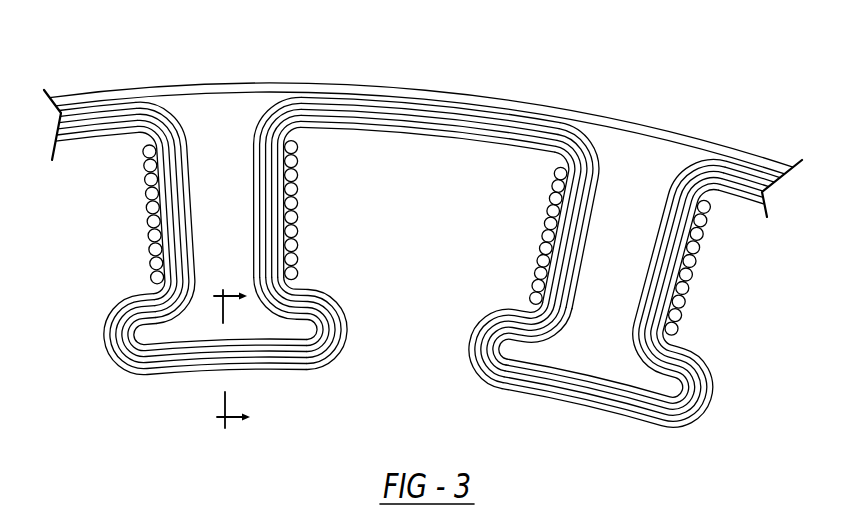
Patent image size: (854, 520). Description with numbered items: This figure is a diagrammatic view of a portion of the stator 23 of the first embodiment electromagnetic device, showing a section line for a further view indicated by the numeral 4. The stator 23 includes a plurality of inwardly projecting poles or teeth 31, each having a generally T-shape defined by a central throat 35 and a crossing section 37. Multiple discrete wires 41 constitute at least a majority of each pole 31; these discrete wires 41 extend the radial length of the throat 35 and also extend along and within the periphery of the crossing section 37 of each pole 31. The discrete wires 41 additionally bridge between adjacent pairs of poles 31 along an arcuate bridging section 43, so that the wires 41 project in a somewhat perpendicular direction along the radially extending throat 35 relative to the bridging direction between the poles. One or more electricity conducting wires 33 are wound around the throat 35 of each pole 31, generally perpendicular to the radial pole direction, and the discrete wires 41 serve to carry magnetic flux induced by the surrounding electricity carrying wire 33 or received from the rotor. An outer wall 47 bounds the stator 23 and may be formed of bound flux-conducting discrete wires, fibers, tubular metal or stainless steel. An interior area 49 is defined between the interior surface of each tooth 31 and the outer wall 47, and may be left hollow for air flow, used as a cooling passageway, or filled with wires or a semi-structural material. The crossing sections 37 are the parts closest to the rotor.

The stator 23 is at (586, 54).
The outer wall 47 is at (416, 93).
The bridging section 43 is at (445, 118).
The throat 35 is at (183, 168).
The discrete wires 41 is at (270, 177).
The pole 31 is at (326, 312).
The crossing section 37 is at (182, 377).
The electricity conducting wire 33 is at (147, 217).
The interior area 49 is at (636, 253).
The section line 4- 4 is at (232, 360).